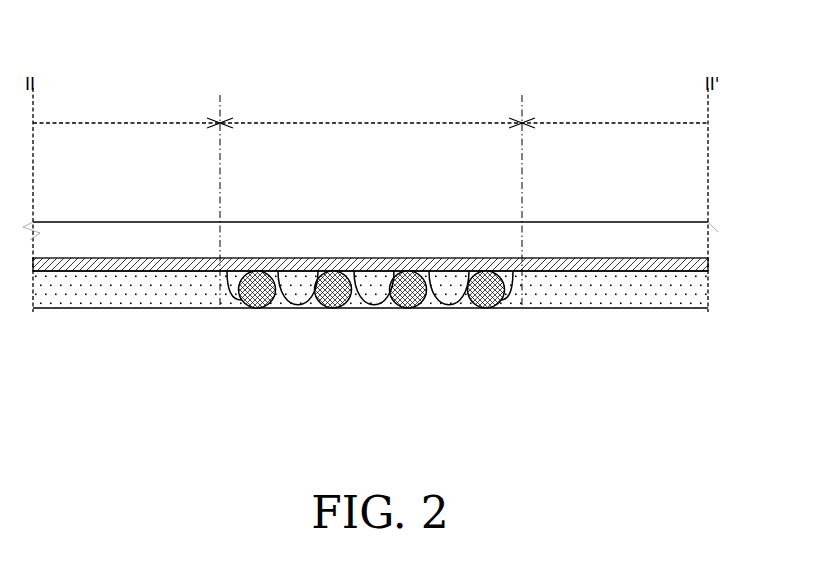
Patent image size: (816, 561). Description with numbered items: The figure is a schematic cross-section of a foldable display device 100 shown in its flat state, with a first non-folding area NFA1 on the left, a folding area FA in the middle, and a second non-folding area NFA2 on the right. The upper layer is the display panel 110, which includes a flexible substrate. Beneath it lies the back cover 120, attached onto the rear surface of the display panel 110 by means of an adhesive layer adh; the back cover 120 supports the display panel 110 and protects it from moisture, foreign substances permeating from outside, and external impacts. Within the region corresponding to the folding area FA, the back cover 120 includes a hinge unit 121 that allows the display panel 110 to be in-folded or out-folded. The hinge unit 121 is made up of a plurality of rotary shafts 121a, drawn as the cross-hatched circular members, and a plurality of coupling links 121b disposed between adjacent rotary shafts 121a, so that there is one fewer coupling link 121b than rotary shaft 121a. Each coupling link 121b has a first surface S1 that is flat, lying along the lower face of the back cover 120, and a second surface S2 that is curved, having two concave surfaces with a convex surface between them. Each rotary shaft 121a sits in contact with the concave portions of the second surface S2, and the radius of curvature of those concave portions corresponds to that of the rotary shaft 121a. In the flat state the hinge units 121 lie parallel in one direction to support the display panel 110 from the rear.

The foldable display device 100 is at (677, 51).
The display panel 110 is at (688, 238).
The adhesive layer adh is at (688, 266).
The back cover 120 is at (370, 294).
The hinge unit 121 is at (370, 354).
The rotary shafts 121a is at (253, 298).
The coupling links 121b is at (298, 295).
The first surface S1 is at (372, 308).
The second surface S2 is at (367, 271).
The folding area FA is at (380, 108).
The first non-folding area NFA1 is at (125, 108).
The second non-folding area NFA2 is at (615, 108).